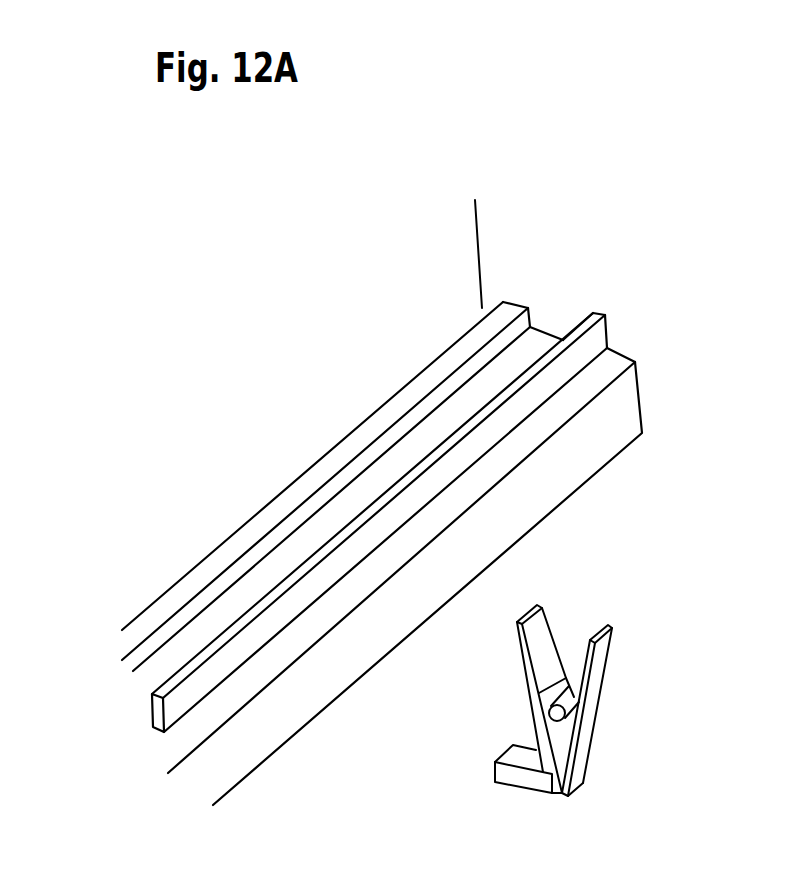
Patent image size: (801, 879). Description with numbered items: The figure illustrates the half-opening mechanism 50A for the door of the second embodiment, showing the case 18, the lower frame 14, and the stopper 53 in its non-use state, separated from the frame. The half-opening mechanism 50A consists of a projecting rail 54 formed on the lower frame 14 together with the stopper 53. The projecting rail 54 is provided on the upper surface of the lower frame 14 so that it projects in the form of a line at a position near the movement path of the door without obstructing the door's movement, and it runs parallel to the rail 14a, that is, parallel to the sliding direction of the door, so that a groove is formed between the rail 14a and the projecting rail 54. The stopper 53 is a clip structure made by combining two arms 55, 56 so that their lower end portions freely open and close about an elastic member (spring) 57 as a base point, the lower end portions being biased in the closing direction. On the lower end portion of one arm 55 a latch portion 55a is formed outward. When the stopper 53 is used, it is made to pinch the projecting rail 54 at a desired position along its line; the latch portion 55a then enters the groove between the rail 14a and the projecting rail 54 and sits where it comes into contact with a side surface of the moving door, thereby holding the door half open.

The half-opening mechanism 50A is at (267, 330).
The lower frame 14 is at (598, 445).
The rail 14a is at (508, 308).
The projecting rail 54 is at (607, 333).
The case 18 is at (465, 240).
The stopper 53 is at (618, 668).
The arm 55 is at (535, 688).
The latch portion 55a is at (505, 773).
The arm 56 is at (577, 753).
The elastic member (spring) 57 is at (550, 718).